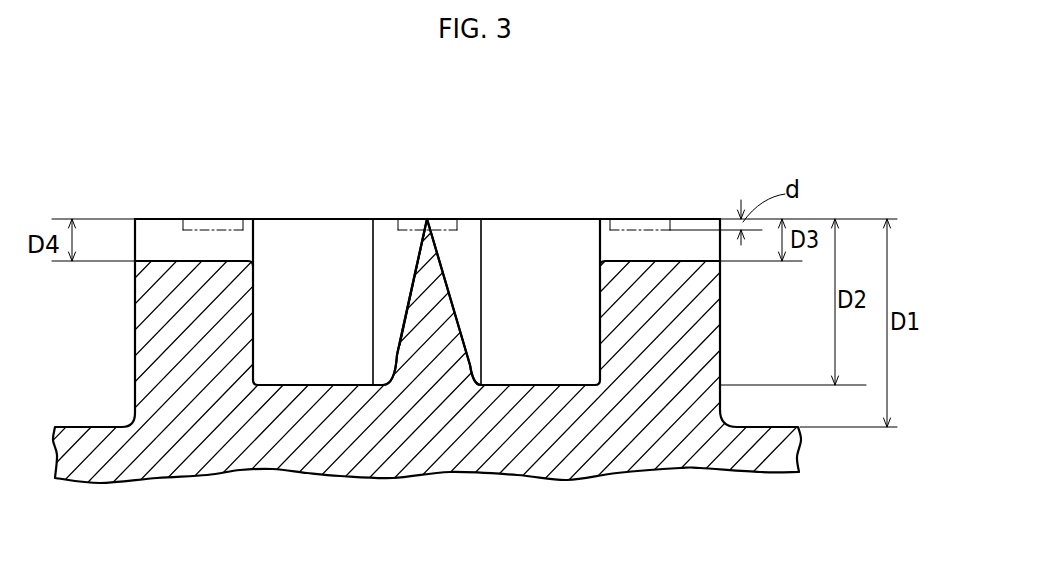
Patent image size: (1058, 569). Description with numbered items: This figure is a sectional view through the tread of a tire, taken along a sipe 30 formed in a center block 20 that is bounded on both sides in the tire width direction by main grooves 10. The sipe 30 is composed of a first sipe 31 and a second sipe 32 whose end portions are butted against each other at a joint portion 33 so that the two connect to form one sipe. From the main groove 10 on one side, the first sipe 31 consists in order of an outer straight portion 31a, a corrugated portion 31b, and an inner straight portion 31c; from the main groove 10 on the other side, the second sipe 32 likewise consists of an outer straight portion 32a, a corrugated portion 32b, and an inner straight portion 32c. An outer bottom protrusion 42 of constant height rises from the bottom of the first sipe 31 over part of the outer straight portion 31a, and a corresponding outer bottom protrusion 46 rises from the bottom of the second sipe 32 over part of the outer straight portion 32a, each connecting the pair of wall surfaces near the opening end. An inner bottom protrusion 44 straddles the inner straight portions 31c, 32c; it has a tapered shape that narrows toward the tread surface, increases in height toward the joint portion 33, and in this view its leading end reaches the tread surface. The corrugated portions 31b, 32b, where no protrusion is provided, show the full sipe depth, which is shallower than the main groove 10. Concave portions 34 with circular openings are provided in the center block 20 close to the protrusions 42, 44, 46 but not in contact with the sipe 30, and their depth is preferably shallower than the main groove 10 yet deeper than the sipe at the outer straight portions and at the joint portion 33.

The main groove 10 is at (93, 425).
The center block 20 is at (682, 216).
The sipe 30 is at (427, 188).
The first sipe 31 is at (310, 218).
The outer straight portion 31a is at (168, 233).
The corrugated portion 31b is at (306, 313).
The inner straight portion 31c is at (397, 306).
The second sipe 32 is at (538, 217).
The outer straight portion 32a is at (640, 250).
The corrugated portion 32b is at (547, 318).
The inner straight portion 32c is at (458, 309).
The joint portion 33 is at (427, 219).
The concave portion 34 is at (191, 219).
The outer bottom protrusion 42 is at (188, 261).
The inner bottom protrusion 44 is at (435, 298).
The outer bottom protrusion 46 is at (633, 261).